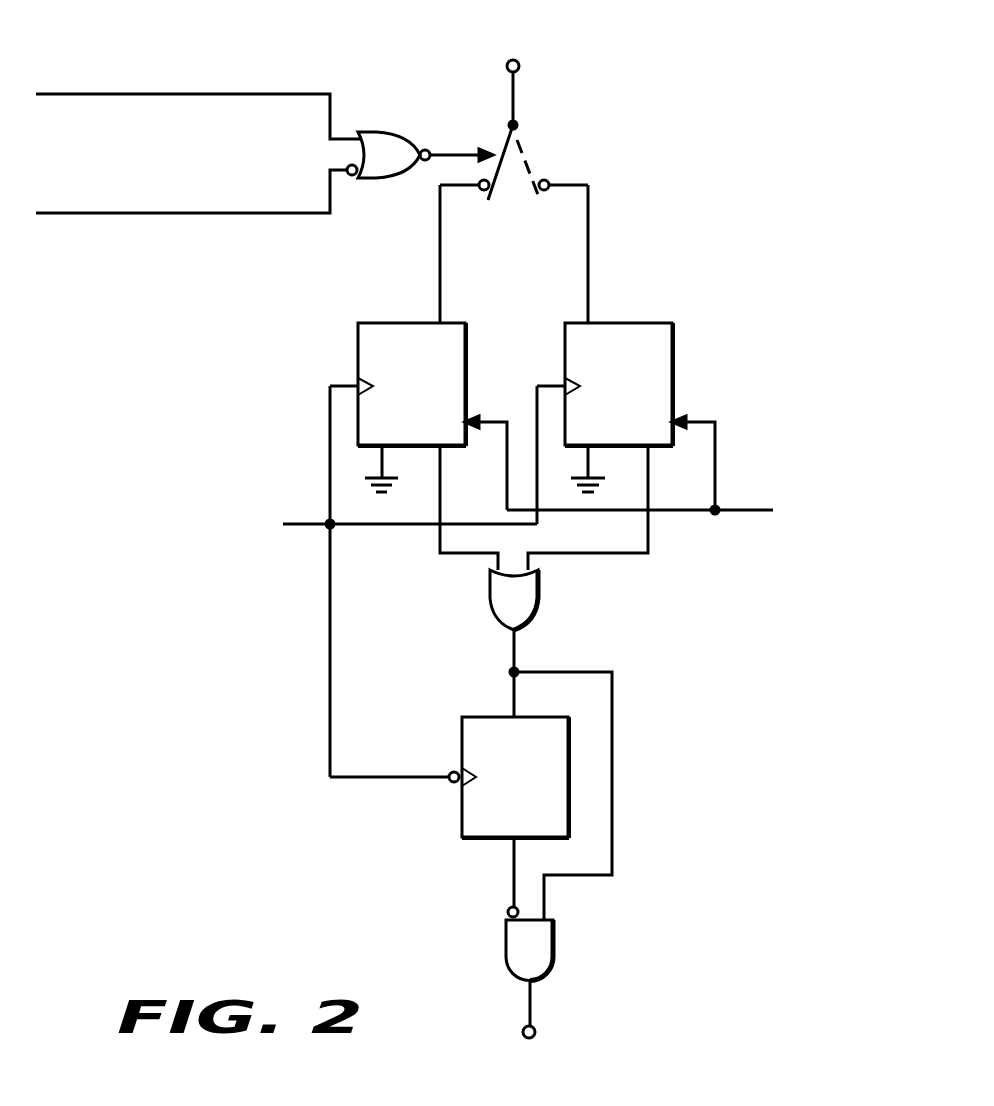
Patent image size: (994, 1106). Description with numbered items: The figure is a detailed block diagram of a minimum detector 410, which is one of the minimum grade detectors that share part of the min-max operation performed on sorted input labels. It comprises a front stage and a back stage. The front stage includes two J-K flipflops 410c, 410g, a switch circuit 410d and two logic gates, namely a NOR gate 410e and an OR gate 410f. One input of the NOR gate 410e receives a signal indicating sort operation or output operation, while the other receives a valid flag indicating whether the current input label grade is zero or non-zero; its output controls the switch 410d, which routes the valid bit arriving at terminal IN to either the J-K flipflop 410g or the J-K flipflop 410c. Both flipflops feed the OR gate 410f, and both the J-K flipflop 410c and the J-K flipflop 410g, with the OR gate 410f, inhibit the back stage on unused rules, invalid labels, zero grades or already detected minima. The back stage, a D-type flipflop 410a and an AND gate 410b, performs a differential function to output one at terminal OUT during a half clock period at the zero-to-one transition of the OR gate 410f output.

The minimum detector 410 is at (252, 646).
The D-type flipflop 410a is at (470, 717).
The AND gate 410b is at (556, 961).
The J-K flipflop 410c is at (455, 323).
The switch circuit 410d is at (531, 163).
The NOR gate 410e is at (383, 132).
The OR gate 410f is at (540, 605).
The J-K flipflop 410g is at (648, 323).